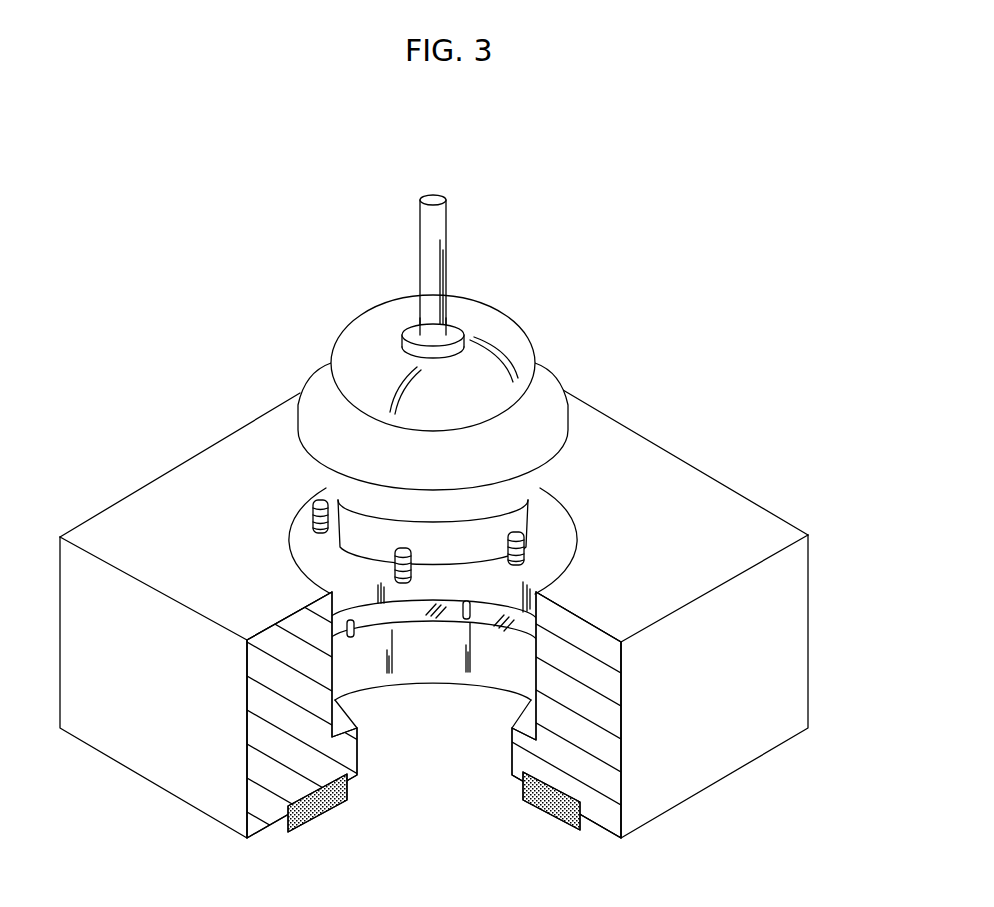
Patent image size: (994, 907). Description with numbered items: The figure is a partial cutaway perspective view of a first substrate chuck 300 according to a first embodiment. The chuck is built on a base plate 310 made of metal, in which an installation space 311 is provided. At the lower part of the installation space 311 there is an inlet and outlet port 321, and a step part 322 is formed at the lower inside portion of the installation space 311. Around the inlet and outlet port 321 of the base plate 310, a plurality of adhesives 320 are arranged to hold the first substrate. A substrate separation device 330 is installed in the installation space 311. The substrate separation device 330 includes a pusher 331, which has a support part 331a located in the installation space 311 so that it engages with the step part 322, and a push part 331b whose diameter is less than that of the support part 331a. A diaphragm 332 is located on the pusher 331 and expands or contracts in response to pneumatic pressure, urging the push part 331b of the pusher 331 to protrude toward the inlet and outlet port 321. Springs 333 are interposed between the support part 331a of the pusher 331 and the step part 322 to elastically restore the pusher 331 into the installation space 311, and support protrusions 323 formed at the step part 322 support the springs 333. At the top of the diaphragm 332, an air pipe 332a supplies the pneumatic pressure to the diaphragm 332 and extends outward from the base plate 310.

The first substrate chuck 300 is at (142, 119).
The base plate 310 is at (453, 642).
The installation space 311 is at (556, 533).
The adhesives 320 is at (316, 812).
The inlet and outlet port 321 is at (427, 705).
The step part 322 is at (513, 613).
The support protrusions 323 is at (345, 628).
The substrate separation device 330 is at (441, 376).
The pusher 331 is at (540, 442).
The support part 331a is at (533, 462).
The push part 331b is at (489, 528).
The diaphragm 332 is at (498, 328).
The air pipe 332a is at (443, 223).
The springs 333 is at (393, 566).